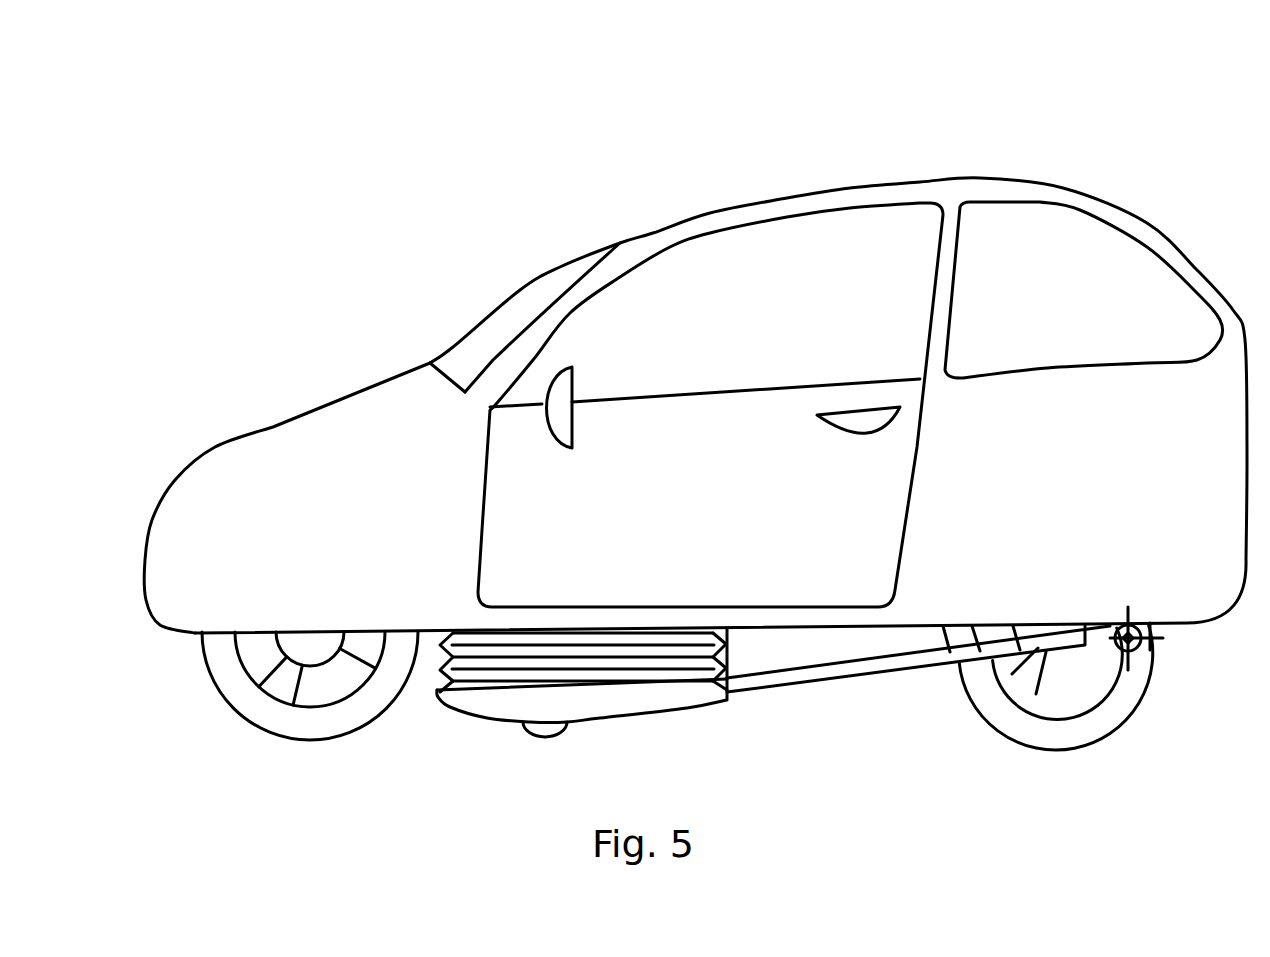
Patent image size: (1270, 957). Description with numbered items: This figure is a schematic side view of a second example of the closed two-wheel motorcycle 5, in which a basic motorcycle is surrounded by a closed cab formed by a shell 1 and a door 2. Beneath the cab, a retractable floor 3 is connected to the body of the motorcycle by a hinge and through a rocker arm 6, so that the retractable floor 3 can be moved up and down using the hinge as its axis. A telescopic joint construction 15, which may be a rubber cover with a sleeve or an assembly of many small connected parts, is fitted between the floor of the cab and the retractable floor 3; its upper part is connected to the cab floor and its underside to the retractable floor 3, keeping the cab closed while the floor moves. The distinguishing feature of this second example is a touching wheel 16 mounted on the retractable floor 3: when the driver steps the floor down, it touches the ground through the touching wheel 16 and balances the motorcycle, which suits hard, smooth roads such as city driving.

The shell 1 is at (405, 498).
The door 2 is at (658, 490).
The retractable floor 3 is at (683, 690).
The two-wheel motorcycle 5 is at (307, 720).
The rocker arm 6 is at (828, 680).
The telescopic joint construction 15 is at (496, 630).
The touching wheel 16 is at (543, 723).